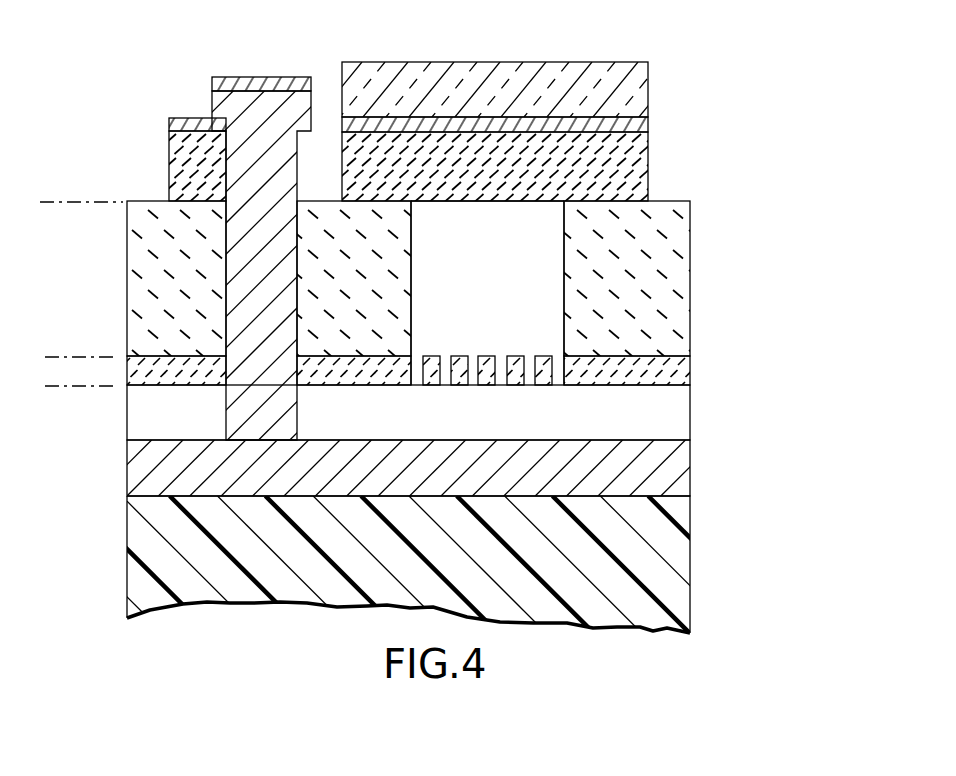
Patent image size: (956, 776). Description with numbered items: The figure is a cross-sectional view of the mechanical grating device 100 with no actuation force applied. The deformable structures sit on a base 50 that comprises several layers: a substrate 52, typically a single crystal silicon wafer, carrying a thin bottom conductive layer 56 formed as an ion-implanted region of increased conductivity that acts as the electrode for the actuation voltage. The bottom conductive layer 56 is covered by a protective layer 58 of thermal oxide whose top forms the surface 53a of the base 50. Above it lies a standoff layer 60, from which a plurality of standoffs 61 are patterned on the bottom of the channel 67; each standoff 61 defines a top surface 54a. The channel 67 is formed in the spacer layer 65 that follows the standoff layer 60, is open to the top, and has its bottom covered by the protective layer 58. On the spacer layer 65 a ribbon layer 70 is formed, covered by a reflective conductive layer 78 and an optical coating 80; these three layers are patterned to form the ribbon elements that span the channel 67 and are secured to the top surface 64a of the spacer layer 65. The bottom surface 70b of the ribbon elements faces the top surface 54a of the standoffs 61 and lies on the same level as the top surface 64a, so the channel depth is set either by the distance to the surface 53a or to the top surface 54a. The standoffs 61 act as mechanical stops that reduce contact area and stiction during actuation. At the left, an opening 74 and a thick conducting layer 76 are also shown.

The base 50 is at (90, 497).
The substrate 52 is at (685, 565).
The surface of the base 53a is at (65, 386).
The top surface of standoffs 54a is at (80, 357).
The thin bottom conductive layer 56 is at (685, 470).
The protective layer 58 is at (687, 412).
The standoff layer 60 is at (690, 372).
The standoff 61 is at (523, 356).
The top surface of the spacer layer 64a is at (82, 202).
The spacer layer 65 is at (685, 247).
The channel 67 is at (481, 285).
The ribbon layer 70 is at (647, 163).
The bottom surface of the ribbon elements 70b is at (492, 201).
The opening 74 is at (225, 225).
The thick conducting layer 76 is at (225, 115).
The conductive layer 78 is at (642, 125).
The optical coating 80 is at (603, 72).
The mechanical grating device 100 is at (698, 62).